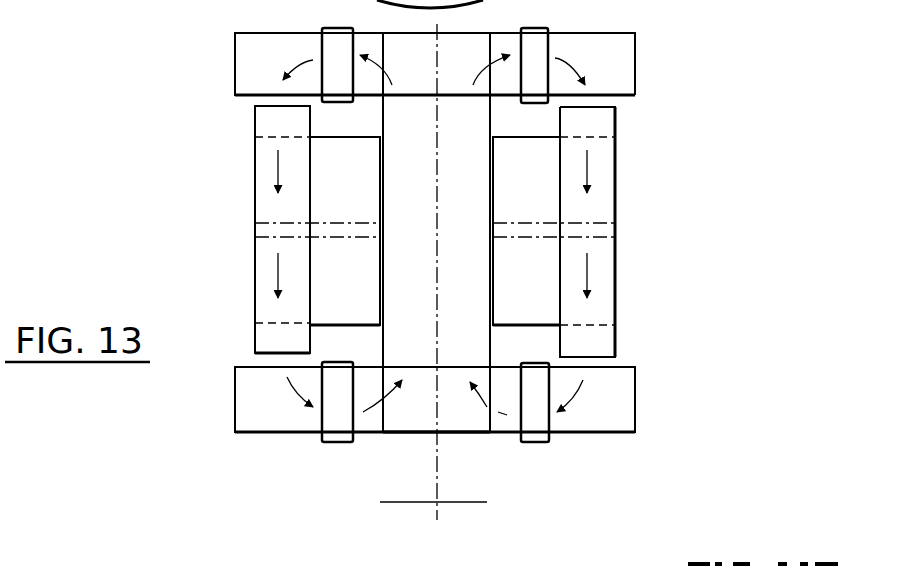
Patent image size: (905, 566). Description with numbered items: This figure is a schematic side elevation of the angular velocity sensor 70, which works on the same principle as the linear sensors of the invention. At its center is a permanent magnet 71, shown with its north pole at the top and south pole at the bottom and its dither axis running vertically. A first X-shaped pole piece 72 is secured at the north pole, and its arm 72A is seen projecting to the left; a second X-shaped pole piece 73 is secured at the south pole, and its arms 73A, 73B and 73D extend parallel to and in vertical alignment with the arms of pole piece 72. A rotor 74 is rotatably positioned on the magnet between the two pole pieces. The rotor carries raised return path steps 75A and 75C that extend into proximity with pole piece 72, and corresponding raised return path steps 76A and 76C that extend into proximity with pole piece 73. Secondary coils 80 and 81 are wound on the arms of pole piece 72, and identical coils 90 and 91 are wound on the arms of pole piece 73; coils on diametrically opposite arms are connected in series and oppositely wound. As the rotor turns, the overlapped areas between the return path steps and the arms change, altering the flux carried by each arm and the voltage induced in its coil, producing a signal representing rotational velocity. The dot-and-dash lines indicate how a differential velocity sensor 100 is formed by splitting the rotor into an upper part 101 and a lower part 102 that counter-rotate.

The angular velocity sensor 70 is at (190, 203).
The permanent magnet 71 is at (475, 246).
The first X-shaped pole piece 72 is at (468, 33).
The arm of first pole piece 72A is at (247, 62).
The second X-shaped pole piece 73 is at (381, 440).
The arm of second pole piece 73A is at (255, 433).
The arm of second pole piece 73B is at (612, 435).
The arm of second pole piece 73D is at (453, 422).
The rotor 74 is at (620, 163).
The raised return path step 75A is at (257, 123).
The raised return path step 75C is at (617, 126).
The raised return path step 76A is at (257, 350).
The raised return path step 76C is at (617, 342).
The secondary coil 80 is at (337, 48).
The secondary coil 81 is at (540, 50).
The secondary coil 90 is at (340, 428).
The secondary coil 91 is at (533, 432).
The differential velocity sensor 100 is at (620, 237).
The upper part of rotor 101 is at (603, 203).
The lower part of rotor 102 is at (617, 292).